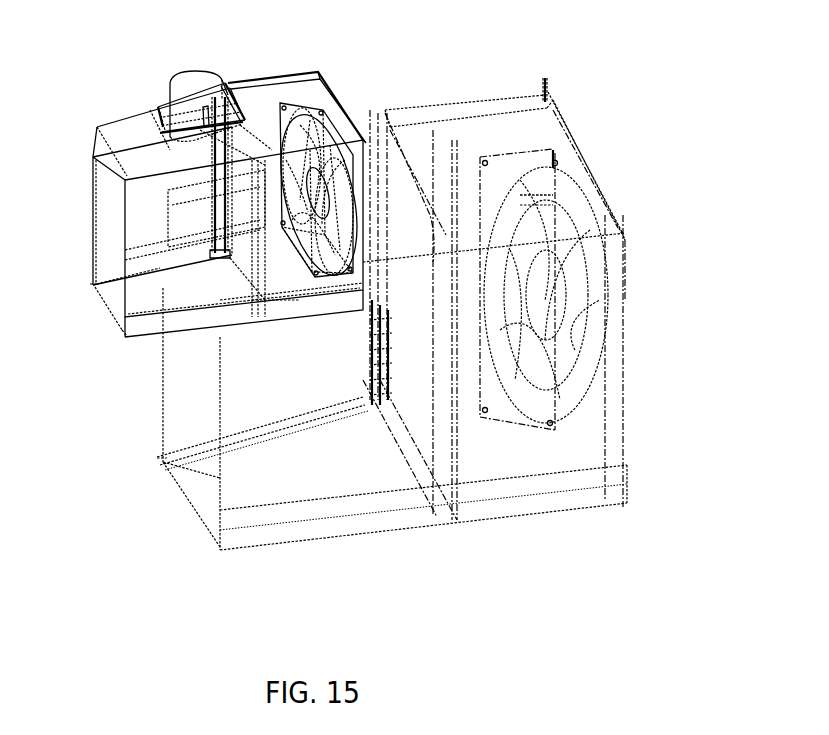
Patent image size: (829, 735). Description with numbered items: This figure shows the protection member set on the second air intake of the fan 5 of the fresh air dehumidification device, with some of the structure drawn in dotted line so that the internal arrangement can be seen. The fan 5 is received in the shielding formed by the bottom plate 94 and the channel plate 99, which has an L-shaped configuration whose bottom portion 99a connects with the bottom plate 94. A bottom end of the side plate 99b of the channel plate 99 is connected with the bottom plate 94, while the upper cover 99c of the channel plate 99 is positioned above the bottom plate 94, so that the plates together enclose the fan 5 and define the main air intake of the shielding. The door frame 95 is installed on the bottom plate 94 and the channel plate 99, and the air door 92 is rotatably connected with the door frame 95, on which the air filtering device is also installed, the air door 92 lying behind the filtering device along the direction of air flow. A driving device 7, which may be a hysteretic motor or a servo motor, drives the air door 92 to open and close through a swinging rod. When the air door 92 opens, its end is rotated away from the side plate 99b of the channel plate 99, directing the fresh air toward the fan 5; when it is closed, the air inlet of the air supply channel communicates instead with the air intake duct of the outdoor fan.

The fan 5 is at (330, 260).
The driving device 7 is at (187, 88).
The air door 92 is at (90, 157).
The bottom plate 94 is at (112, 310).
The door frame 95 is at (415, 212).
The channel plate 99 is at (215, 292).
The bottom portion 99a is at (377, 385).
The side plate 99b is at (282, 525).
The upper cover 99c is at (268, 240).